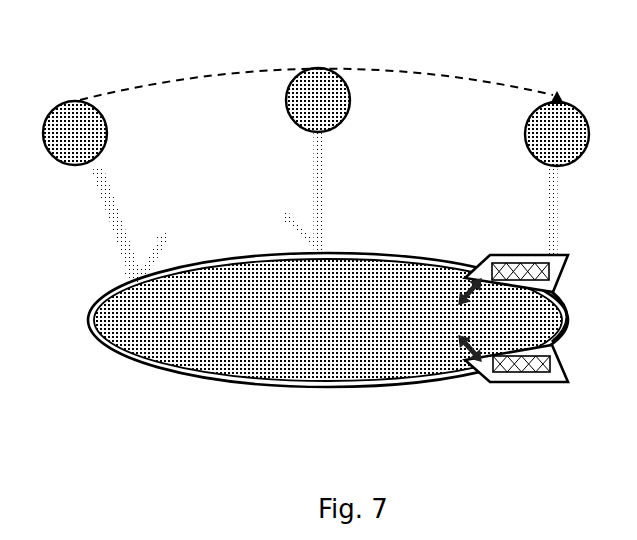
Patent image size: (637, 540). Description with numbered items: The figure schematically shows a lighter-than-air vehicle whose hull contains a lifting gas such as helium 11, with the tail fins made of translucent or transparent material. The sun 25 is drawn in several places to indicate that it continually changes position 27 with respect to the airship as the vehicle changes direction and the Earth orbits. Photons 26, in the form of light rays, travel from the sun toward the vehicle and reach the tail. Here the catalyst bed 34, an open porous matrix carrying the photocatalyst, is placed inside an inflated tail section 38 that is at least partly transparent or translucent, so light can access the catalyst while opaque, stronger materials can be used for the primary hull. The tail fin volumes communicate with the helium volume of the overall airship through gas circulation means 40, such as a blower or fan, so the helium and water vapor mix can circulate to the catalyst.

The helium 11 is at (241, 342).
The sun 25 is at (85, 123).
The photons 26 is at (555, 216).
The position 27 is at (415, 67).
The catalyst bed 34 is at (491, 266).
The inflated tail section 38 is at (507, 251).
The gas circulation means 40 is at (462, 344).